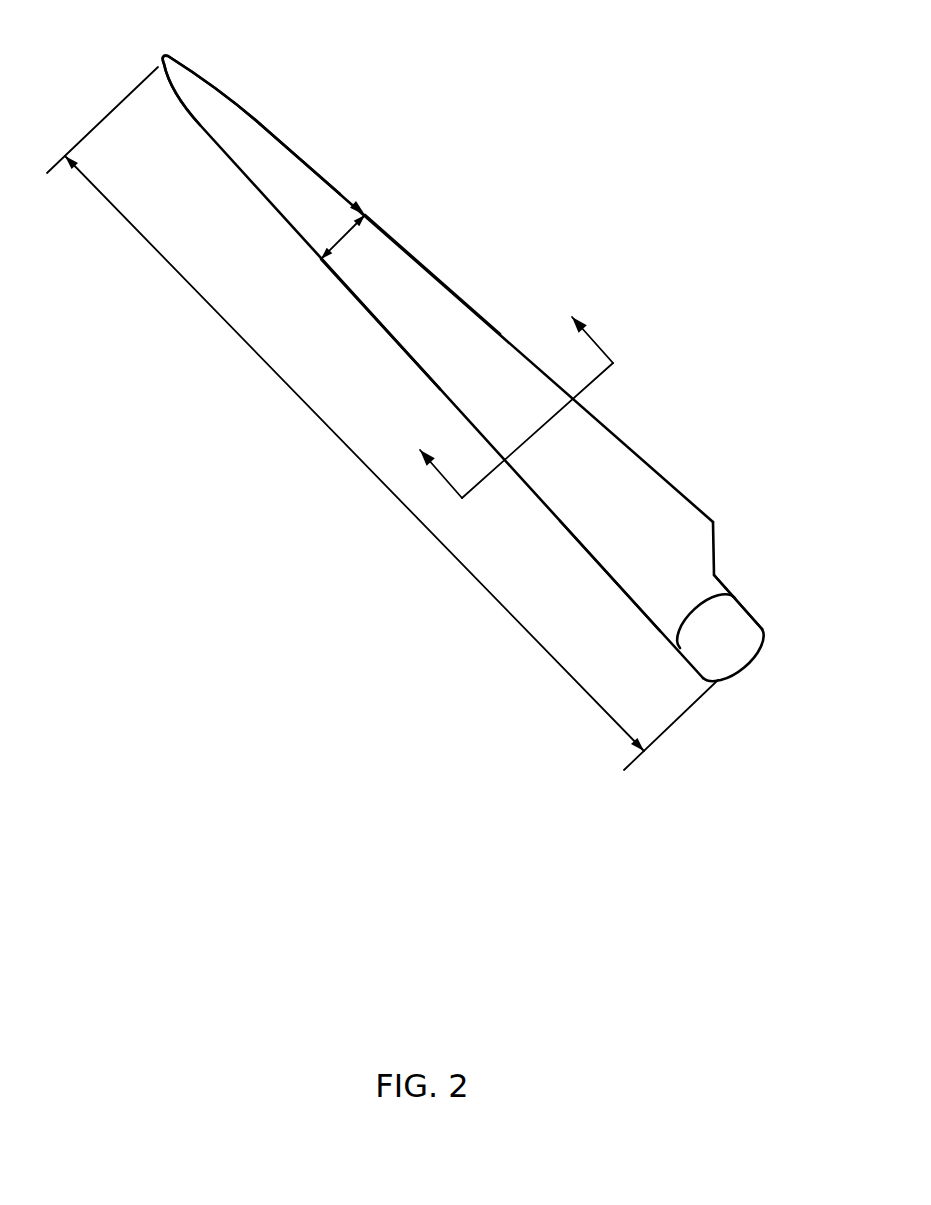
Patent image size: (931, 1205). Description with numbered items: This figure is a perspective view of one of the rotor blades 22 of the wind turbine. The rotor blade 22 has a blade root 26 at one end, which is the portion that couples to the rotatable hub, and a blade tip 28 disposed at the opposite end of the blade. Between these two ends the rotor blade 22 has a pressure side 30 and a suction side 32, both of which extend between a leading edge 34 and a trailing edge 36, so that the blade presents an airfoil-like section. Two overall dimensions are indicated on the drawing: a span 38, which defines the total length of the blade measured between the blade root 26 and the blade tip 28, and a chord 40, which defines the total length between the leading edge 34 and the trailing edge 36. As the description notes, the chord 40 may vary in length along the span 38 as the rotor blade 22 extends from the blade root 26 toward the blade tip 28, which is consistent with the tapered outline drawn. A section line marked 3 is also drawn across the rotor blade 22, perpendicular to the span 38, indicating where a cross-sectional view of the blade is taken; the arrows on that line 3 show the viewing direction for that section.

The rotor blade 22 is at (657, 237).
The blade root 26 is at (730, 628).
The blade tip 28 is at (163, 57).
The pressure side 30 is at (632, 550).
The suction side 32 is at (398, 282).
The leading edge 34 is at (380, 320).
The trailing edge 36 is at (293, 143).
The span 38 is at (222, 315).
The chord 40 is at (345, 234).
The section line 3- 3 is at (504, 396).